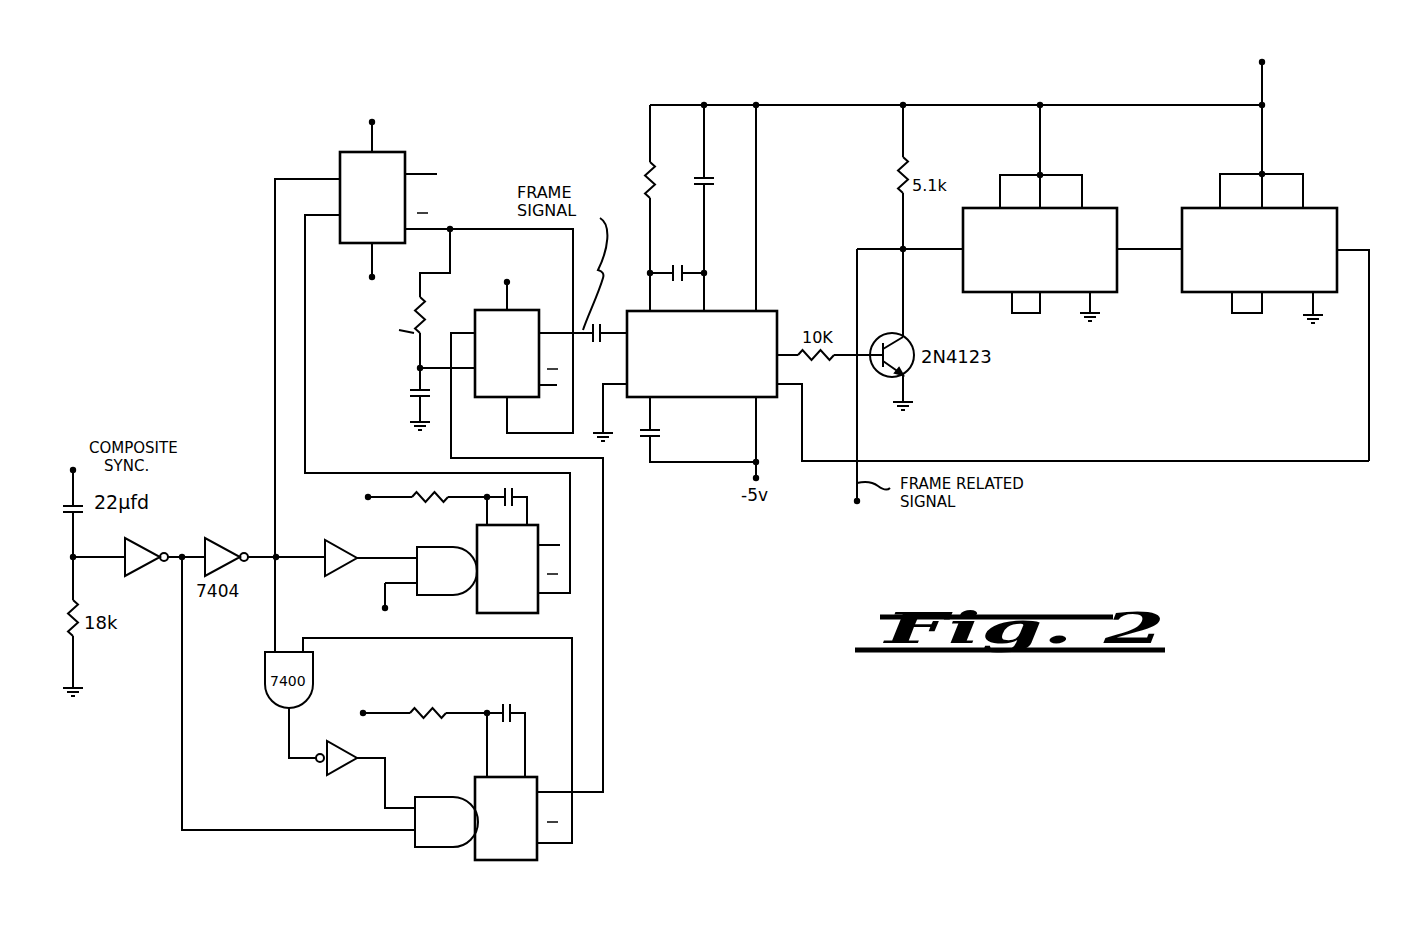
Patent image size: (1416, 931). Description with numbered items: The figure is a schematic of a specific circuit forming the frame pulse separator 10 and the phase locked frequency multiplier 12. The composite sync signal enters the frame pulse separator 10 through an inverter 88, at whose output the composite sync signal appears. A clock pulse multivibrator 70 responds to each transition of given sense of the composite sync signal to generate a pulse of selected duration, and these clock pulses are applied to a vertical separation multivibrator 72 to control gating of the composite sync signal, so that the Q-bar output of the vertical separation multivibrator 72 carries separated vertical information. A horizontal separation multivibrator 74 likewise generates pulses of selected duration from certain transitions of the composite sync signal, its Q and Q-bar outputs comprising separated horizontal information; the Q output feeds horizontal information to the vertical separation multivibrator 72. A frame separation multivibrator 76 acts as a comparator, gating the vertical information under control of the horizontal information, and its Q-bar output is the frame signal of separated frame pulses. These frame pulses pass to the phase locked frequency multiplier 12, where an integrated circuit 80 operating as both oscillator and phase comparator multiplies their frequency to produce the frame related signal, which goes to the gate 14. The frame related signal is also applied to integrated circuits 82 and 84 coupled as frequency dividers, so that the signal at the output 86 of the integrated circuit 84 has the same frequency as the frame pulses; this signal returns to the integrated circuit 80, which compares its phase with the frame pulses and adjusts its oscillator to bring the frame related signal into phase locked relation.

The frame pulse separator 10 is at (360, 441).
The phase locked frequency multiplier 12 is at (1116, 386).
The gate 14 is at (881, 555).
The clock pulse multivibrator 70 is at (477, 545).
The vertical separation multivibrator 72 is at (358, 245).
The horizontal separation multivibrator 74 is at (503, 862).
The frame separation multivibrator 76 is at (495, 398).
The integrated circuit 80 is at (689, 398).
The integrated circuit 82 is at (1065, 292).
The integrated circuit 84 is at (1215, 292).
The output 86 is at (1361, 250).
The inverter 88 is at (140, 548).